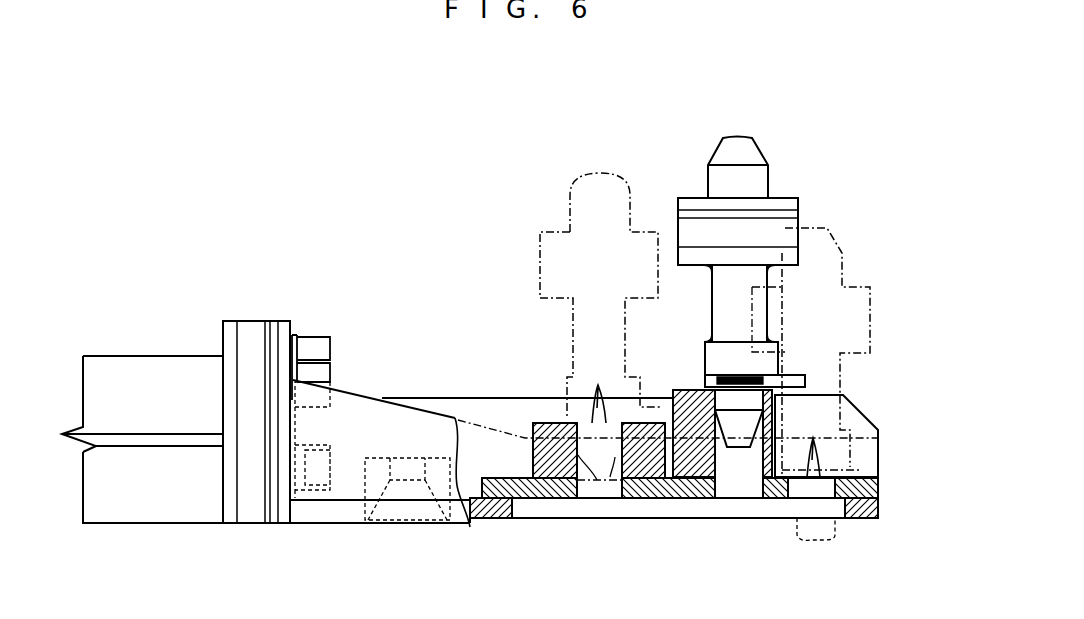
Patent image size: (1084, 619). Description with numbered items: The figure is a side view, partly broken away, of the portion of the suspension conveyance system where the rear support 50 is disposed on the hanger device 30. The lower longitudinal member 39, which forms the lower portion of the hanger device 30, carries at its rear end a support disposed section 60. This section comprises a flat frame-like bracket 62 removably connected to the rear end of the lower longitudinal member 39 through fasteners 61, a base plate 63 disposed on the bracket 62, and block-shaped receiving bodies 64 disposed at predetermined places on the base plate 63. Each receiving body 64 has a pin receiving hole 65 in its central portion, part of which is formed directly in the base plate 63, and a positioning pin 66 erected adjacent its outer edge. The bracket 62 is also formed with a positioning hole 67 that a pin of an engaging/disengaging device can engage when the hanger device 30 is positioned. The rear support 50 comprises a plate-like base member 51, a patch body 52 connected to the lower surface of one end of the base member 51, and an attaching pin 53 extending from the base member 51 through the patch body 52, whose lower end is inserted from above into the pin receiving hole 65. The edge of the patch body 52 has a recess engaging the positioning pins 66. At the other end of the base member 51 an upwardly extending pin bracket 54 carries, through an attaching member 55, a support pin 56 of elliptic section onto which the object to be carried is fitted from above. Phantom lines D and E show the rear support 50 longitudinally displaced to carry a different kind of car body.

The hanger device 30 is at (143, 354).
The lower longitudinal member 39 is at (148, 502).
The rear support 50 is at (787, 249).
The base member 51 is at (773, 365).
The patch body 52 is at (803, 383).
The attaching pin 53 is at (722, 396).
The pin bracket 54 is at (767, 280).
The attaching member 55 is at (787, 227).
The support pin 56 is at (737, 148).
The support disposed section 60 is at (333, 523).
The fastener 61 is at (322, 343).
The bracket 62 is at (302, 513).
The base plate 63 is at (538, 498).
The receiving body 64 is at (655, 480).
The pin receiving hole 65 is at (597, 480).
The positioning pin 66 is at (598, 393).
The positioning hole 67 is at (397, 520).
The phantom line position D is at (570, 213).
The phantom line position E is at (873, 313).